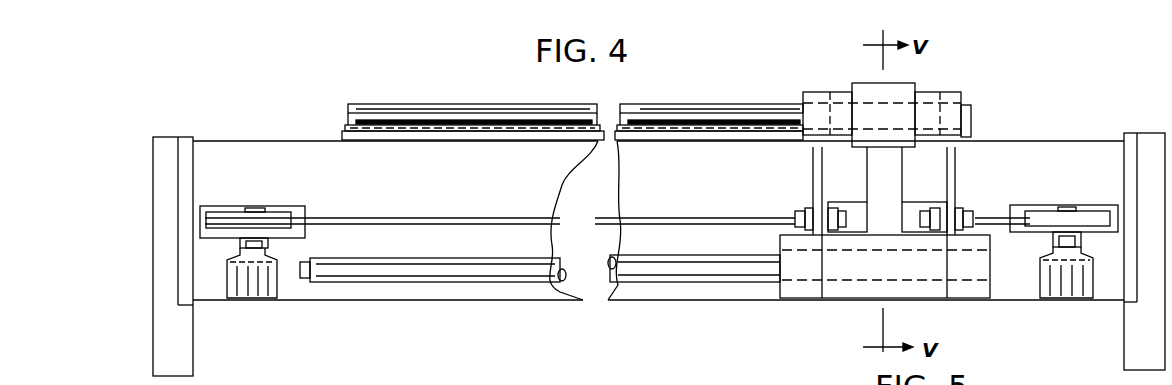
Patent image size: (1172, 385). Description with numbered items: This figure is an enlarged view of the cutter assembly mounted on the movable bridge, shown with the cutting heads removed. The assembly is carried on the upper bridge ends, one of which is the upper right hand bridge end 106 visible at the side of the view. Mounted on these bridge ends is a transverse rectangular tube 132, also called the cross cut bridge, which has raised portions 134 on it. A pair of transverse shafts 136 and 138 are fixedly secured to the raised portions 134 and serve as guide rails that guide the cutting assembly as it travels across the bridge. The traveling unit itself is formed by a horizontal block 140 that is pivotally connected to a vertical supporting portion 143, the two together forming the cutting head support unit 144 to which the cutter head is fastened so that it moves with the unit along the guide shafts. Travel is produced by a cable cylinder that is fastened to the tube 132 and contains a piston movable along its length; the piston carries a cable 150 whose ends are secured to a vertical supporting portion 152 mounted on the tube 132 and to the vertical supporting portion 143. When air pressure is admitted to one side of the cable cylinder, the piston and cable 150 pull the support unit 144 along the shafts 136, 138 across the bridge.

The upper right hand bridge end 106 is at (153, 218).
The transverse rectangular tube 132 is at (262, 140).
The raised portions 134 is at (350, 131).
The transverse shaft 136 is at (547, 104).
The transverse shaft 138 is at (412, 256).
The horizontal block 140 is at (915, 83).
The vertical supporting portion 143 is at (813, 186).
The cutting head support unit 144 is at (1012, 118).
The cable 150 is at (462, 208).
The vertical supporting portion 152 is at (265, 208).